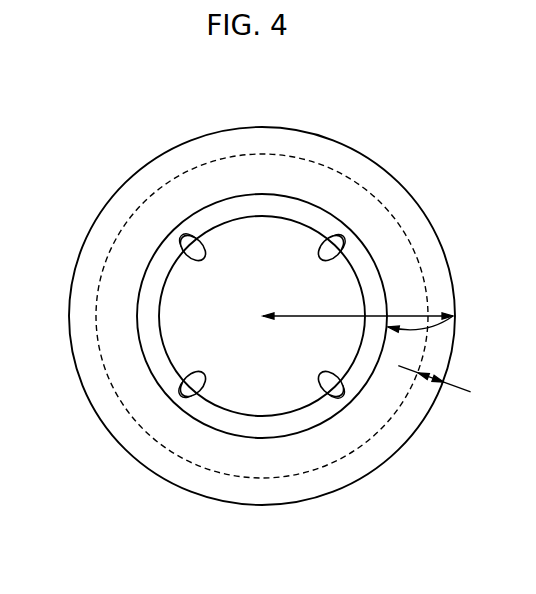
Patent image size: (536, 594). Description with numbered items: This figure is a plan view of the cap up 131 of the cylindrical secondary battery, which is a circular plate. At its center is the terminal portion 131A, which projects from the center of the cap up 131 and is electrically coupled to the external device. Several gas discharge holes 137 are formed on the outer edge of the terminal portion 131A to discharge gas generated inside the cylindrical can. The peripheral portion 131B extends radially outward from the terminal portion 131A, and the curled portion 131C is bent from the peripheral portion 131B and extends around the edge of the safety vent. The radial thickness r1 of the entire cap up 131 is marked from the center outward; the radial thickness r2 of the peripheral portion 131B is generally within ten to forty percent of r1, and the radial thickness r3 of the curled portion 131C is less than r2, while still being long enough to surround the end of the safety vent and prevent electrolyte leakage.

The cap up 131 is at (90, 233).
The terminal portion 131A is at (283, 362).
The peripheral portion 131B is at (283, 466).
The curled portion 131C is at (365, 463).
The gas discharge holes 137 is at (190, 234).
The radial thickness of the entire cap up r1 is at (453, 316).
The radial thickness of the peripheral portion r2 is at (420, 333).
The radial thickness of the curled portion r3 is at (441, 385).